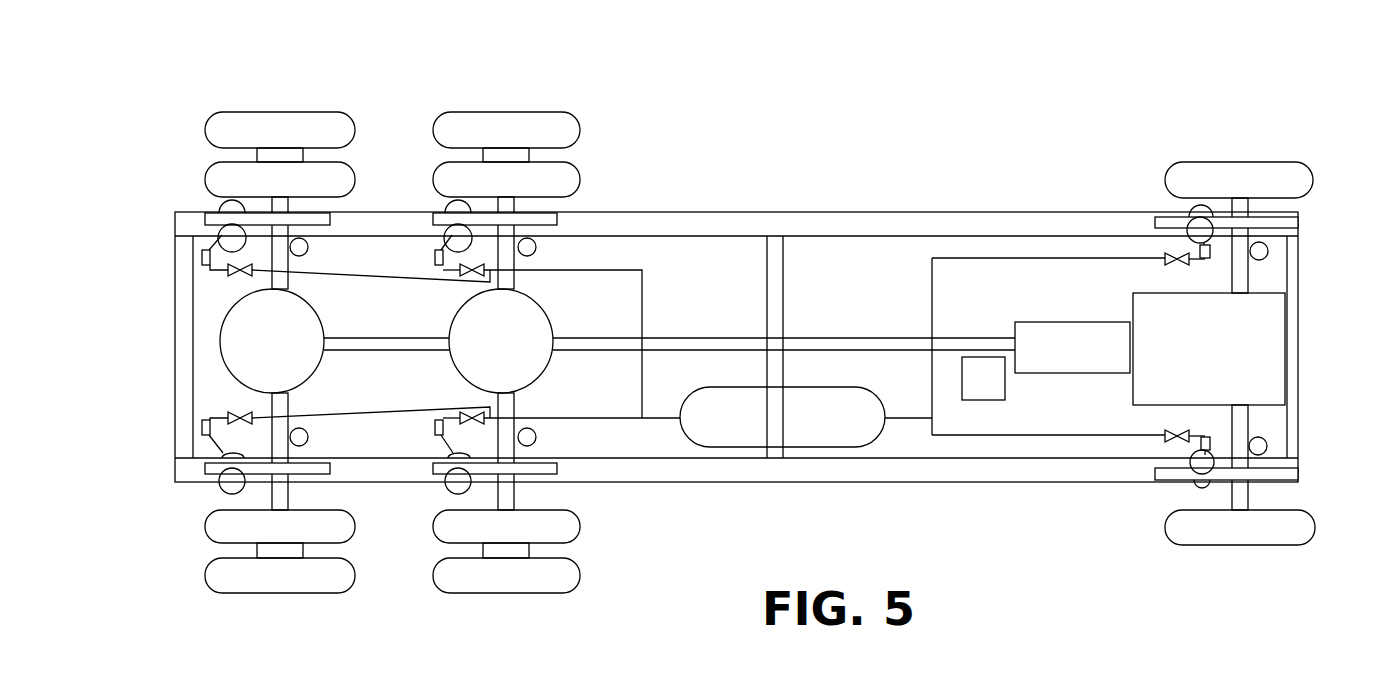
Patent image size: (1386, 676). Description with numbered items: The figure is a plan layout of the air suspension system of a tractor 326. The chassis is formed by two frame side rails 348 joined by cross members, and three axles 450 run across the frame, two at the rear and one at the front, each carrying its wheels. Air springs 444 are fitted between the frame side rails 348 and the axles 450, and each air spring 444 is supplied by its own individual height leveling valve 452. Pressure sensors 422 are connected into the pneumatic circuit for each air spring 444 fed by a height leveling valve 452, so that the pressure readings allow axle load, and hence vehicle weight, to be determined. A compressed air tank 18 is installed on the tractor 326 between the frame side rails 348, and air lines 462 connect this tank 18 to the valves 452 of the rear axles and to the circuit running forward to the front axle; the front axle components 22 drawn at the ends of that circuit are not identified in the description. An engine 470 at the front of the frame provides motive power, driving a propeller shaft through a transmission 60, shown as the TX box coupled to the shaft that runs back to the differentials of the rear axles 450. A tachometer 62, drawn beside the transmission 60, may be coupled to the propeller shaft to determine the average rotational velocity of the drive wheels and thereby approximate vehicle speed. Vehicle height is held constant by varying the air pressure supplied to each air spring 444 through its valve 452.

The tractor 326 is at (890, 109).
The frame side rails 348 is at (924, 212).
The axles 450 is at (281, 495).
The engine 470 is at (810, 338).
The transmission 60 is at (1040, 322).
The tachometer 62 is at (985, 400).
The compressed air tank 18 is at (848, 422).
The air springs 444 is at (208, 233).
The pressure sensors 422 is at (203, 257).
The front brake actuators 22 is at (1210, 253).
The height leveling valves 452 is at (228, 272).
The air lines 462 is at (567, 418).